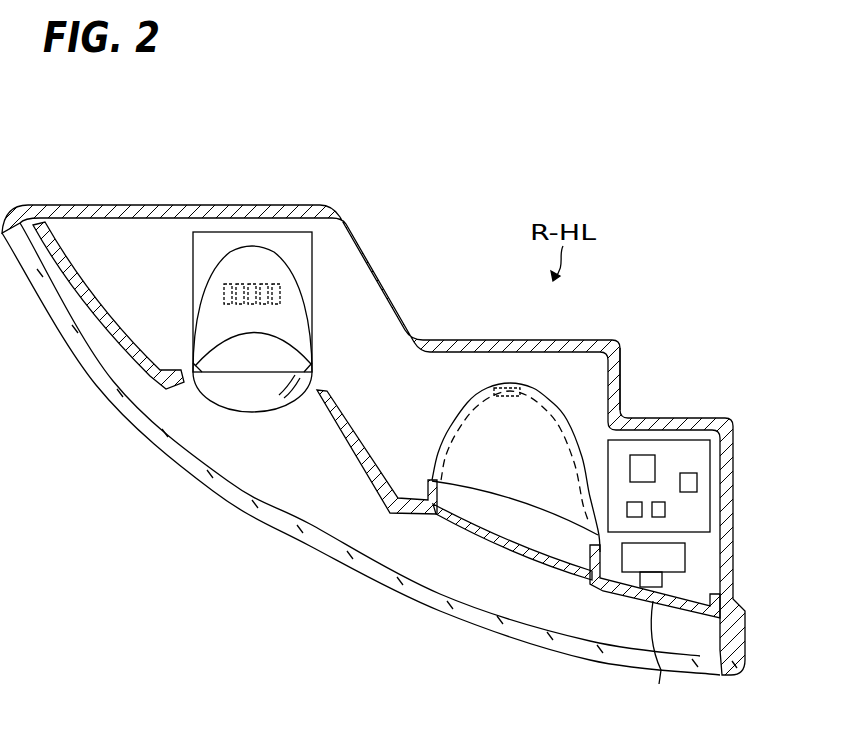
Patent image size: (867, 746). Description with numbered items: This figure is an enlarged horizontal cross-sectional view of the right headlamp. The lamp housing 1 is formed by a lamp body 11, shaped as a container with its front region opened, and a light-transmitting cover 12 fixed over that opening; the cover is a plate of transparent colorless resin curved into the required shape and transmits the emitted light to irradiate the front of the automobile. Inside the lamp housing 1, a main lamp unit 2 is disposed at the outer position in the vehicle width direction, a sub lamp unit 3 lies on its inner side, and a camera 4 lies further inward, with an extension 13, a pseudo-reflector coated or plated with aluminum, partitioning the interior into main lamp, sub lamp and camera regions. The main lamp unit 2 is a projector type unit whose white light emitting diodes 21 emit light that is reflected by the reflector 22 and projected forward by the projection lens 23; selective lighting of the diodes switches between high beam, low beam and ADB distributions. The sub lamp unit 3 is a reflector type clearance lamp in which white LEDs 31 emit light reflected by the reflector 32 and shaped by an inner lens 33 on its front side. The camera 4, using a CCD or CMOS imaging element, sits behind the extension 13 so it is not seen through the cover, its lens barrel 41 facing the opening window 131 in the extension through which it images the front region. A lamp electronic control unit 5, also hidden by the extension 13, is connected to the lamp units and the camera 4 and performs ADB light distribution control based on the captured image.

The lamp housing 1 is at (387, 287).
The main lamp unit 2 is at (231, 305).
The sub lamp unit 3 is at (501, 441).
The camera 4 is at (698, 559).
The lamp electronic control unit 5 is at (712, 480).
The lamp body 11 is at (620, 383).
The light-transmitting cover 12 is at (310, 552).
The extension 13 is at (82, 297).
The white light emitting diodes 21 is at (222, 295).
The reflector 22 is at (206, 333).
The projection lens 23 is at (281, 398).
The white LEDs 31 is at (500, 396).
The reflector 32 is at (443, 441).
The inner lens 33 is at (467, 533).
The lens barrel 41 is at (663, 583).
The opening window 131 is at (661, 653).